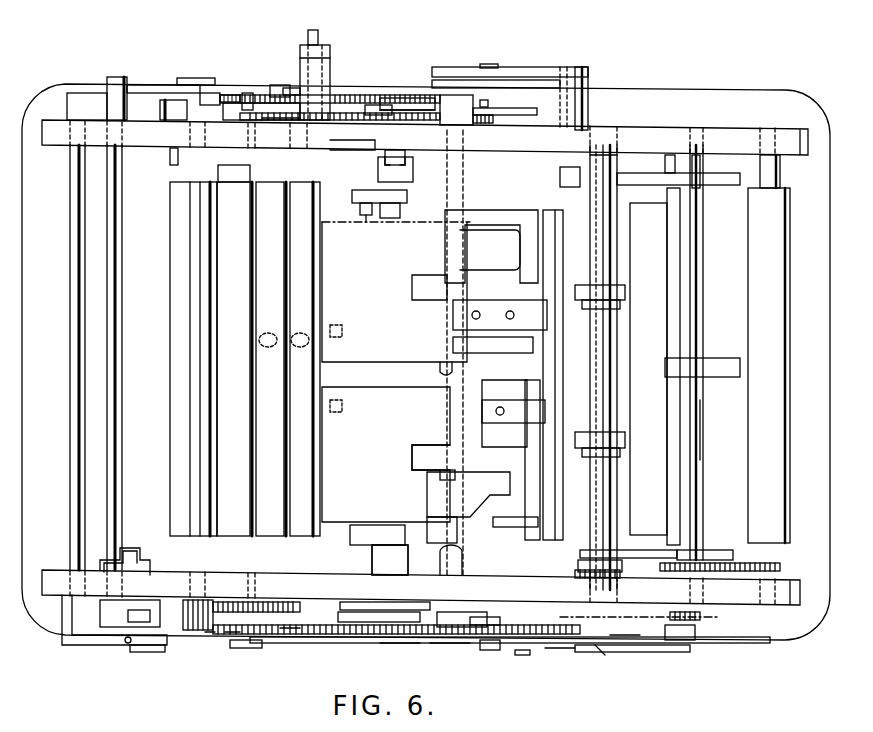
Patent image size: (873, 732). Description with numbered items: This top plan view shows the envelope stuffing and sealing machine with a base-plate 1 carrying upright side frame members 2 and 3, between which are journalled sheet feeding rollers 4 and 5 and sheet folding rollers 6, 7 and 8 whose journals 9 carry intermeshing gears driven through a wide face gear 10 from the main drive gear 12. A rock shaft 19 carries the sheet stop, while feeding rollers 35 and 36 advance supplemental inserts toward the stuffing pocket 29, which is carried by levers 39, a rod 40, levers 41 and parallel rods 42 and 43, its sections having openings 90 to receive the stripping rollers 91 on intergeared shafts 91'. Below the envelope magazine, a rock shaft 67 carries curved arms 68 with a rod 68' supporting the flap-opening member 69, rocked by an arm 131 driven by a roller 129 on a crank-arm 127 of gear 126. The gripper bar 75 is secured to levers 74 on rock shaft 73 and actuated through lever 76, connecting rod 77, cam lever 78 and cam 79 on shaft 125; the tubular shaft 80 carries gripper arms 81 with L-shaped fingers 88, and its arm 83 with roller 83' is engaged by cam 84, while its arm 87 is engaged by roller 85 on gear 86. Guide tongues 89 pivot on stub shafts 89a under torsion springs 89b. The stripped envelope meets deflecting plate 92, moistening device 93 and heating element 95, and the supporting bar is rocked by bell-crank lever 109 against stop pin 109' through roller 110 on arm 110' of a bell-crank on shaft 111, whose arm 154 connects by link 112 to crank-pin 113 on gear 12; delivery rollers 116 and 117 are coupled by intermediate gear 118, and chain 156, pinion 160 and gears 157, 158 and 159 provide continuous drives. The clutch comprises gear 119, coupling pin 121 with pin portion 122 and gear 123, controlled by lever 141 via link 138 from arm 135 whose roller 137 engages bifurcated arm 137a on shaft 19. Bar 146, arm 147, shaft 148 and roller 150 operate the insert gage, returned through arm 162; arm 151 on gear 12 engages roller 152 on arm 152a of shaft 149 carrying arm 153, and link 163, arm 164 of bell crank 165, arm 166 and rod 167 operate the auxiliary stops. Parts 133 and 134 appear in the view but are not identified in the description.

The base-plate 1 is at (22, 372).
The side frame member 2 is at (50, 575).
The side frame member 3 is at (56, 140).
The sheet feeding roller 4 is at (234, 359).
The sheet feeding roller 5 is at (271, 359).
The sheet folding roller 6 is at (268, 341).
The sheet folding roller 7 is at (305, 359).
The sheet folding roller 8 is at (300, 341).
The journal 9 is at (276, 138).
The wide face gear 10 is at (190, 630).
The main drive gear 12 is at (290, 640).
The transverse rock shaft 19 is at (170, 158).
The stuffing device or pocket 29 is at (394, 372).
The feeding roller 35 is at (183, 204).
The feeding roller 36 is at (200, 236).
The lever 39 is at (413, 168).
The transverse rod 40 is at (390, 220).
The lever 41 is at (370, 194).
The transverse parallel rod 42 is at (360, 210).
The transverse parallel rod 43 is at (368, 222).
The transverse rock shaft 67 is at (582, 115).
The curved arm 68 is at (660, 346).
The transverse rod 68' is at (711, 352).
The envelope-flap opening member 69 is at (672, 366).
The transverse rock shaft 73 is at (465, 168).
The lever 74 is at (492, 212).
The gripper bar 75 is at (525, 460).
The lever 76 is at (470, 612).
The connecting rod 77 is at (496, 617).
The cam lever 78 is at (427, 603).
The cam 79 is at (355, 612).
The tubular shaft 80 is at (440, 370).
The gripper arm 81 is at (483, 428).
The arm 83 is at (456, 82).
The roller 83' is at (496, 97).
The cam 84 is at (405, 98).
The roller 85 is at (375, 105).
The gear 86 is at (419, 120).
The arm 87 is at (527, 108).
The L-shaped finger 88 is at (500, 361).
The guide tongue 89 is at (482, 474).
The stub shaft 89a is at (445, 470).
The torsion spring 89b is at (457, 535).
The opening 90 is at (427, 298).
The stripping roller 91 is at (615, 367).
The transverse shaft 91' is at (624, 201).
The deflecting plate 92 is at (648, 369).
The moistening device 93 is at (550, 375).
The heating element 95 is at (667, 290).
The bell-crank lever 109 is at (691, 646).
The stop pin 109' is at (705, 620).
The roller 110 is at (641, 665).
The bell-crank arm 110' is at (610, 661).
The transverse shaft 111 is at (512, 655).
The adjustable link 112 is at (330, 645).
The crank-pin 113 is at (262, 646).
The delivery rollers 116 is at (703, 447).
The delivery rollers 117 is at (760, 330).
The intermediate gear 118 is at (720, 550).
The gear 119 is at (343, 95).
The coupling pin 121 is at (320, 32).
The pin portion 122 is at (323, 68).
The gear 123 is at (318, 120).
The transverse shaft 125 is at (340, 150).
The gear 126 is at (493, 120).
The crank-arm 127 is at (505, 80).
The roller 129 is at (490, 64).
The arm 131 is at (560, 67).
The block 133 is at (262, 118).
The rack 134 is at (246, 93).
The arm 135 is at (265, 92).
The roller 137 is at (212, 93).
The bifurcated arm 137a is at (165, 112).
The connecting link 138 is at (190, 78).
The coupling control lever 141 is at (292, 88).
The bar 146 is at (140, 85).
The arm 147 is at (116, 77).
The transverse rock shaft 148 is at (122, 289).
The transverse shaft 149 is at (70, 291).
The roller 150 is at (281, 85).
The cam-arm 151 is at (209, 640).
The roller 152 is at (230, 640).
The arm 152a is at (95, 645).
The arm 153 is at (97, 94).
The bell-crank arm 154 is at (486, 650).
The chain 156 is at (625, 612).
The intermediate gear 157 is at (400, 641).
The intermediate gear 158 is at (440, 641).
The intermediate gear 159 is at (560, 650).
The pinion 160 is at (620, 636).
The arm 162 is at (128, 620).
The link 163 is at (160, 652).
The bell-crank arm 164 is at (130, 643).
The bell crank 165 is at (140, 556).
The bell-crank arm 166 is at (128, 600).
The rod 167 is at (129, 543).